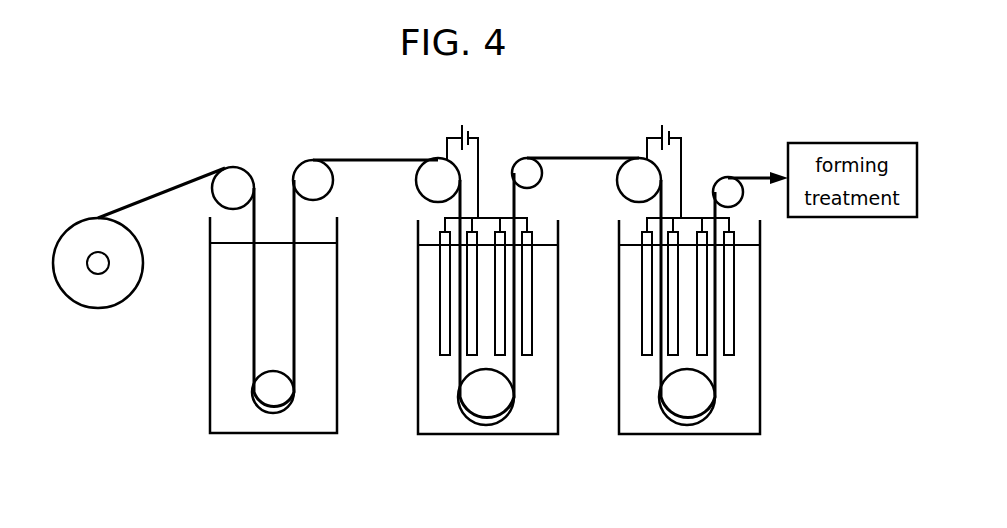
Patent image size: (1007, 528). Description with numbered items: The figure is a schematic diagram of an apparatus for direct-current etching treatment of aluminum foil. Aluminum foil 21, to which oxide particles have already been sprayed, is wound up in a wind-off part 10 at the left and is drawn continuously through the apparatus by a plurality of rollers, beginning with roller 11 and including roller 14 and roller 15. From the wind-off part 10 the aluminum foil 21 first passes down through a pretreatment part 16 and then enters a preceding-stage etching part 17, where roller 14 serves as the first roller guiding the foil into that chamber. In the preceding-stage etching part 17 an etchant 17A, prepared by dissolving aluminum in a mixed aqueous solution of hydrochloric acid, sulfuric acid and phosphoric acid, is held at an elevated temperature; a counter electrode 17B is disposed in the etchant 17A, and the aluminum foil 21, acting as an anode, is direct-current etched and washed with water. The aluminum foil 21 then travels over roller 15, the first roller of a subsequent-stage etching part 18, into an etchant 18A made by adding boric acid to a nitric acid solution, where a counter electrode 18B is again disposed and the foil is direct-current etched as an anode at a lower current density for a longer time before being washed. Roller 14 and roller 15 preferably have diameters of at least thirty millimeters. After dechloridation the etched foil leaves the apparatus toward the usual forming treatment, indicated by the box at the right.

The wind-off part 10 is at (100, 260).
The aluminum foil 21 is at (145, 197).
The roller 11 is at (237, 182).
The roller 14 is at (438, 170).
The roller 15 is at (637, 170).
The pretreatment part 16 is at (287, 435).
The preceding-stage etching part 17 is at (513, 313).
The etchant 17A is at (543, 422).
The counter electrode 17B is at (532, 298).
The subsequent-stage etching part 18 is at (715, 313).
The etchant 18A is at (729, 422).
The counter electrode 18B is at (733, 298).